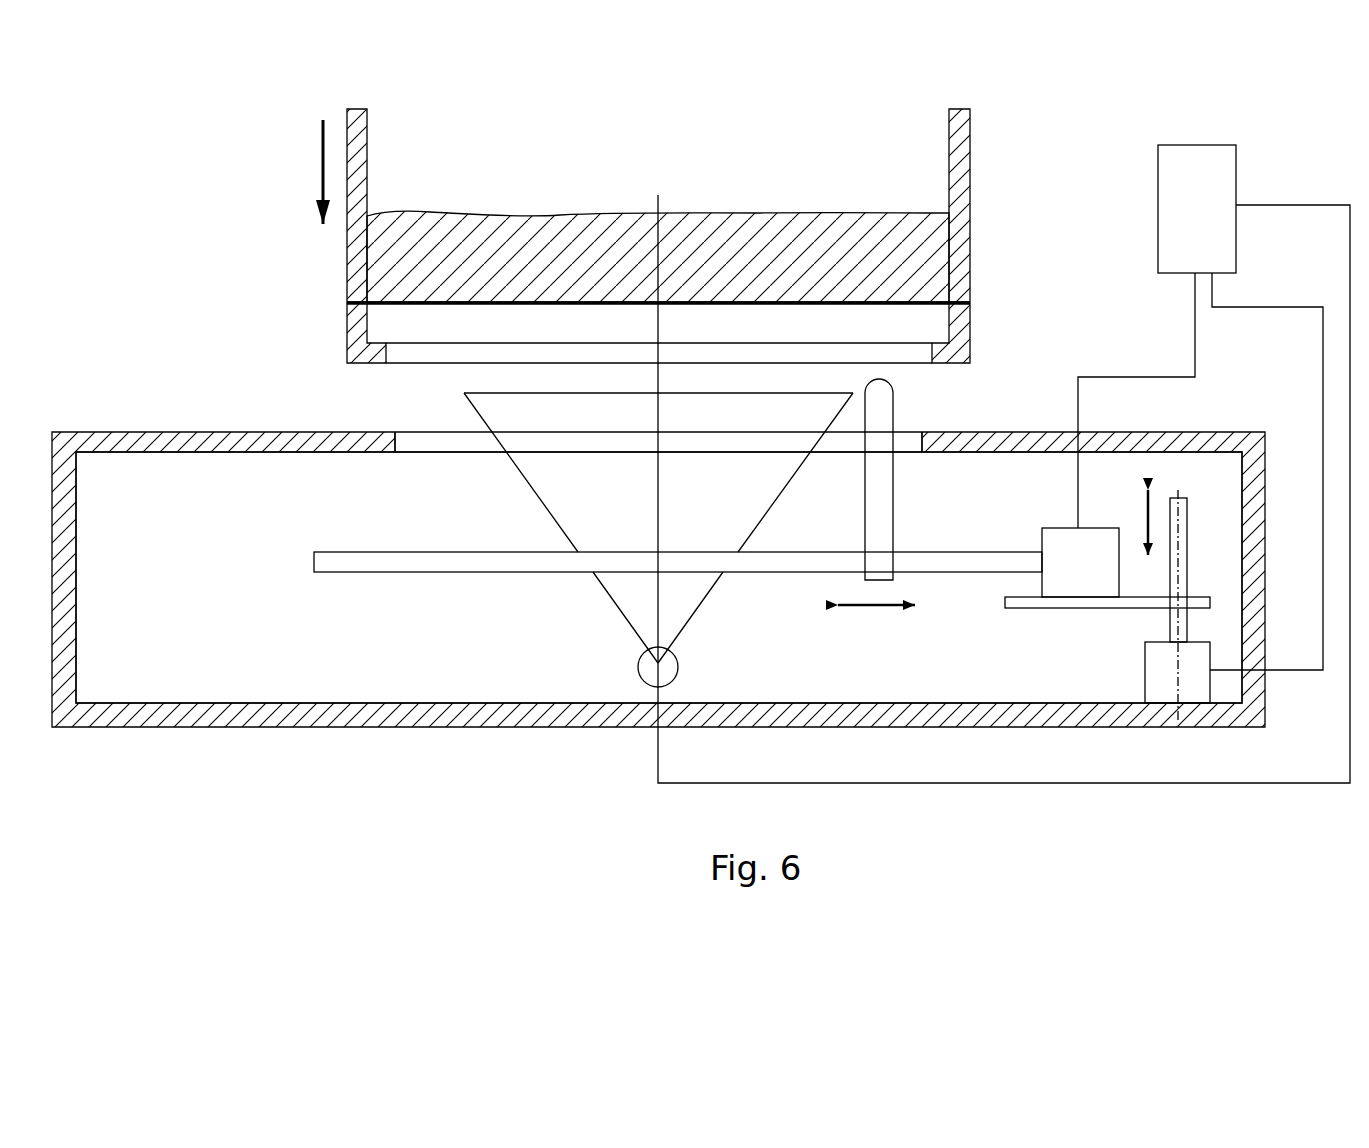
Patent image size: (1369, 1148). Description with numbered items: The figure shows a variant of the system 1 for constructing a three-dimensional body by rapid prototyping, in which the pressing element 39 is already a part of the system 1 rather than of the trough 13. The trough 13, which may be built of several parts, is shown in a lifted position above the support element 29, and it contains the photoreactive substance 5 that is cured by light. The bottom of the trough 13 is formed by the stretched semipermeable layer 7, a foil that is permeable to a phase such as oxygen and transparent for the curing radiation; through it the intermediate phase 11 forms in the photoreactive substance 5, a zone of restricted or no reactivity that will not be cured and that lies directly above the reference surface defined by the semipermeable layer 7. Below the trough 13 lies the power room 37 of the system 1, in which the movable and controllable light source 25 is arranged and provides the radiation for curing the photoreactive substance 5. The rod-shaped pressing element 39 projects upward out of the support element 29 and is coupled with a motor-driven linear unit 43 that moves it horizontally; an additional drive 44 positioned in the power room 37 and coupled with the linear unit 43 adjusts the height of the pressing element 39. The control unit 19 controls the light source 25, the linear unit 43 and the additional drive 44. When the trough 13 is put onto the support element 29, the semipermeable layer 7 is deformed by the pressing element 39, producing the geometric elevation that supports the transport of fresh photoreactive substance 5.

The system 1 is at (538, 752).
The photoreactive substance 5 is at (737, 235).
The semipermeable layer 7 is at (913, 303).
The intermediate phase 11 is at (436, 303).
The trough 13 is at (990, 179).
The control unit 19 is at (1180, 216).
The light source 25 is at (676, 668).
The support element 29 is at (297, 437).
The power room 37 is at (140, 679).
The pressing element 39 is at (890, 422).
The linear drive 43 is at (1063, 576).
The additional drive 44 is at (1161, 687).